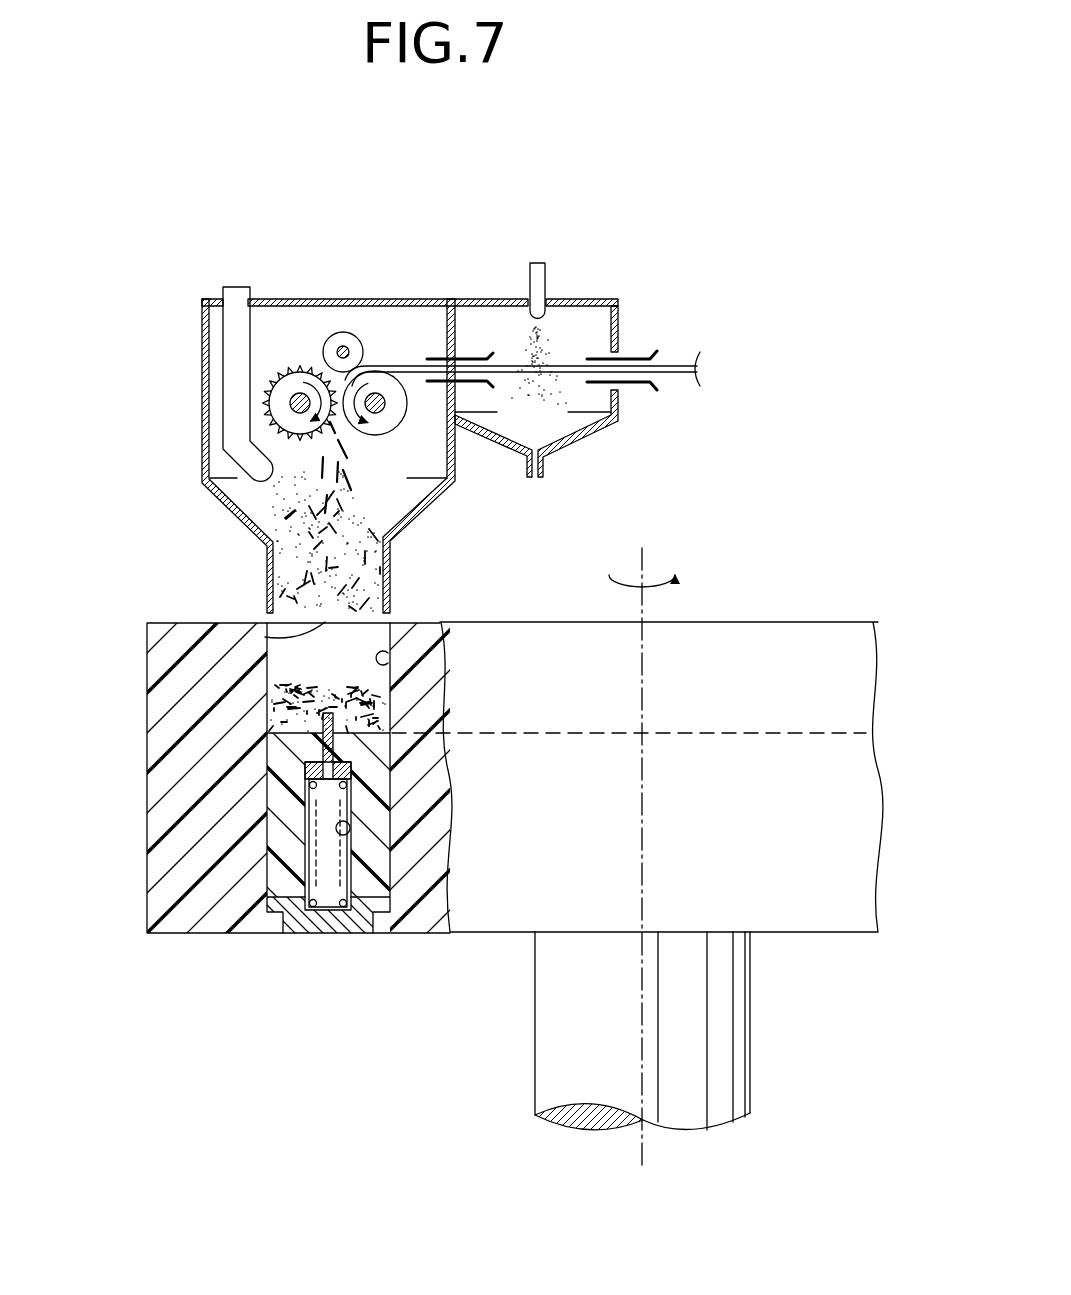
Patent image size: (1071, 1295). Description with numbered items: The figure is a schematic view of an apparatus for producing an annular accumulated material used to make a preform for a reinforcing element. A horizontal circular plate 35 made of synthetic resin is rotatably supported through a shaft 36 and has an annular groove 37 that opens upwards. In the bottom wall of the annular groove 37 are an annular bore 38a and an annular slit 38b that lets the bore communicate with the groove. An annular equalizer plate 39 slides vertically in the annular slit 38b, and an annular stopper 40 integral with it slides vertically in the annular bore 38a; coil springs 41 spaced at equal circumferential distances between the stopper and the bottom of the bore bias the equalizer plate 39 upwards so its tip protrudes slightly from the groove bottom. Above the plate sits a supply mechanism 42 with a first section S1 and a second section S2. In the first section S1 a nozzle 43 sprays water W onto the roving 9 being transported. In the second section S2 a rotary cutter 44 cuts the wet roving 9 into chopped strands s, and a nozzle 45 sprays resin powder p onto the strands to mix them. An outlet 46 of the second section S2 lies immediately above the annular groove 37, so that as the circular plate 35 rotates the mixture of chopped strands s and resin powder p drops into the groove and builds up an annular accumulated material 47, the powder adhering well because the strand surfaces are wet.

The roving 9 is at (573, 366).
The horizontal circular plate 35 is at (157, 893).
The shaft 36 is at (545, 1005).
The annular groove 37 is at (440, 673).
The annular bore 38a is at (350, 833).
The annular slit 38b is at (328, 760).
The annular equalizer plate 39 is at (331, 661).
The annular stopper 40 is at (328, 780).
The coil springs 41 is at (347, 913).
The supply mechanism 42 is at (483, 538).
The nozzle 43 is at (534, 279).
The rotary cutter 44 is at (309, 358).
The nozzle 45 is at (230, 385).
The outlet 46 is at (265, 637).
The annular accumulated material 47 is at (276, 697).
The first section S1 is at (578, 293).
The second section S2 is at (318, 296).
The water W is at (530, 347).
The resin powder p is at (250, 523).
The chopped strands s is at (362, 530).